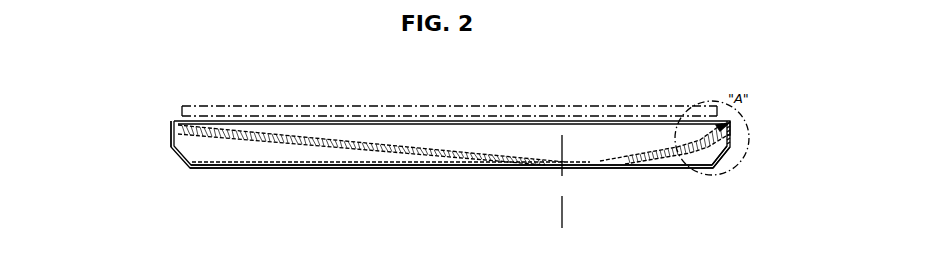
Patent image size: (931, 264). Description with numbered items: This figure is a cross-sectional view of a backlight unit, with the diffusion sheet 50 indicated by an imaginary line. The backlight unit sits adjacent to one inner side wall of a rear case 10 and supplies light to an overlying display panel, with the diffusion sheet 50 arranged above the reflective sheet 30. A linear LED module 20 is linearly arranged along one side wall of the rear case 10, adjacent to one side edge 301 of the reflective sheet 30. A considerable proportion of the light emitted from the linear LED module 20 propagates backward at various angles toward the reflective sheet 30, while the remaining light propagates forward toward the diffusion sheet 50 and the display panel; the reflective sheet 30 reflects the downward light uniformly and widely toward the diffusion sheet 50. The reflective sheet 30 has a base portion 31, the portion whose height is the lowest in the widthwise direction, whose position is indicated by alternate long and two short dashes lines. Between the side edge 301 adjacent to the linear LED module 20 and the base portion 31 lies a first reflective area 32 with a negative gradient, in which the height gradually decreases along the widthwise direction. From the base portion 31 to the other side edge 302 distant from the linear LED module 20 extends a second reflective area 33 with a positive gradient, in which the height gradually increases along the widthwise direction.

The rear case 10 is at (267, 168).
The linear LED module 20 is at (740, 124).
The reflective sheet 30 is at (246, 145).
The base portion 31 is at (562, 168).
The first reflective area 32 is at (632, 162).
The second reflective area 33 is at (383, 156).
The diffusion sheet 50 is at (635, 105).
The side edge 301 is at (738, 150).
The other side edge 302 is at (177, 122).